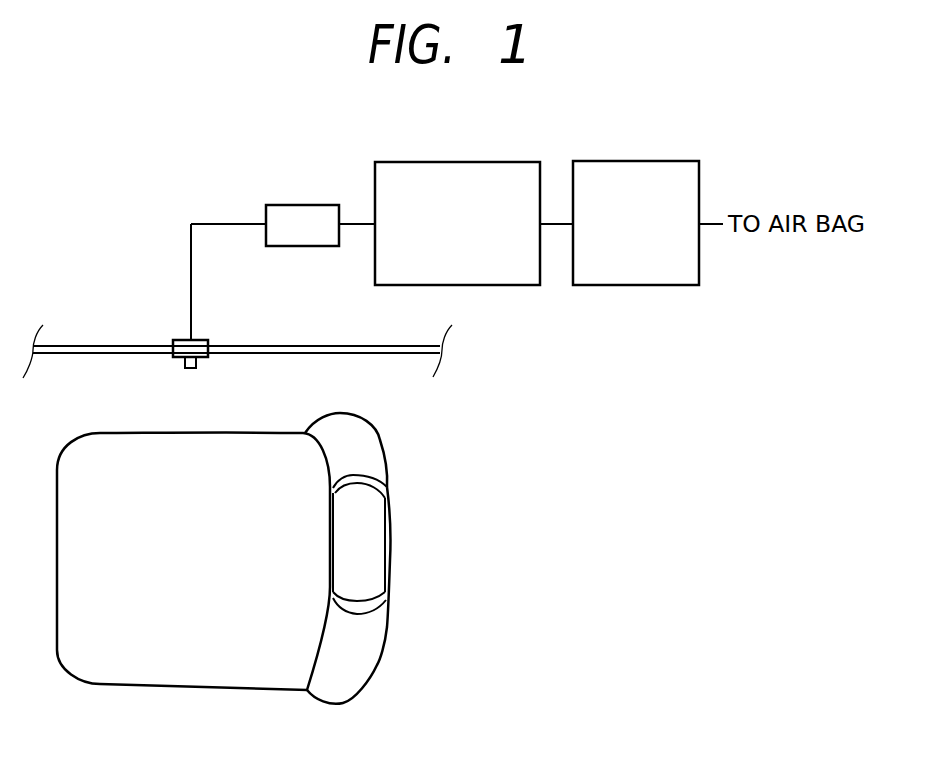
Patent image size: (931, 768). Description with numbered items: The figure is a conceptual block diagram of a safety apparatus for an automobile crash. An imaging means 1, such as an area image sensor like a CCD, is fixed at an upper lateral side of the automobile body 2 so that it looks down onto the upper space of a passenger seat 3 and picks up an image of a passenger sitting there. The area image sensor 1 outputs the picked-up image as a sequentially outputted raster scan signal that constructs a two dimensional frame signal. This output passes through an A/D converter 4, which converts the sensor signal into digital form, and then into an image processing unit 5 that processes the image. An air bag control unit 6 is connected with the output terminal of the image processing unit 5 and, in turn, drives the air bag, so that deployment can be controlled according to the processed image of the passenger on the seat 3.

The imaging means 1 is at (202, 347).
The automobile body 2 is at (333, 347).
The passenger seat 3 is at (113, 453).
The A/D converter 4 is at (314, 205).
The image processing unit 5 is at (492, 162).
The air bag control unit 6 is at (657, 161).